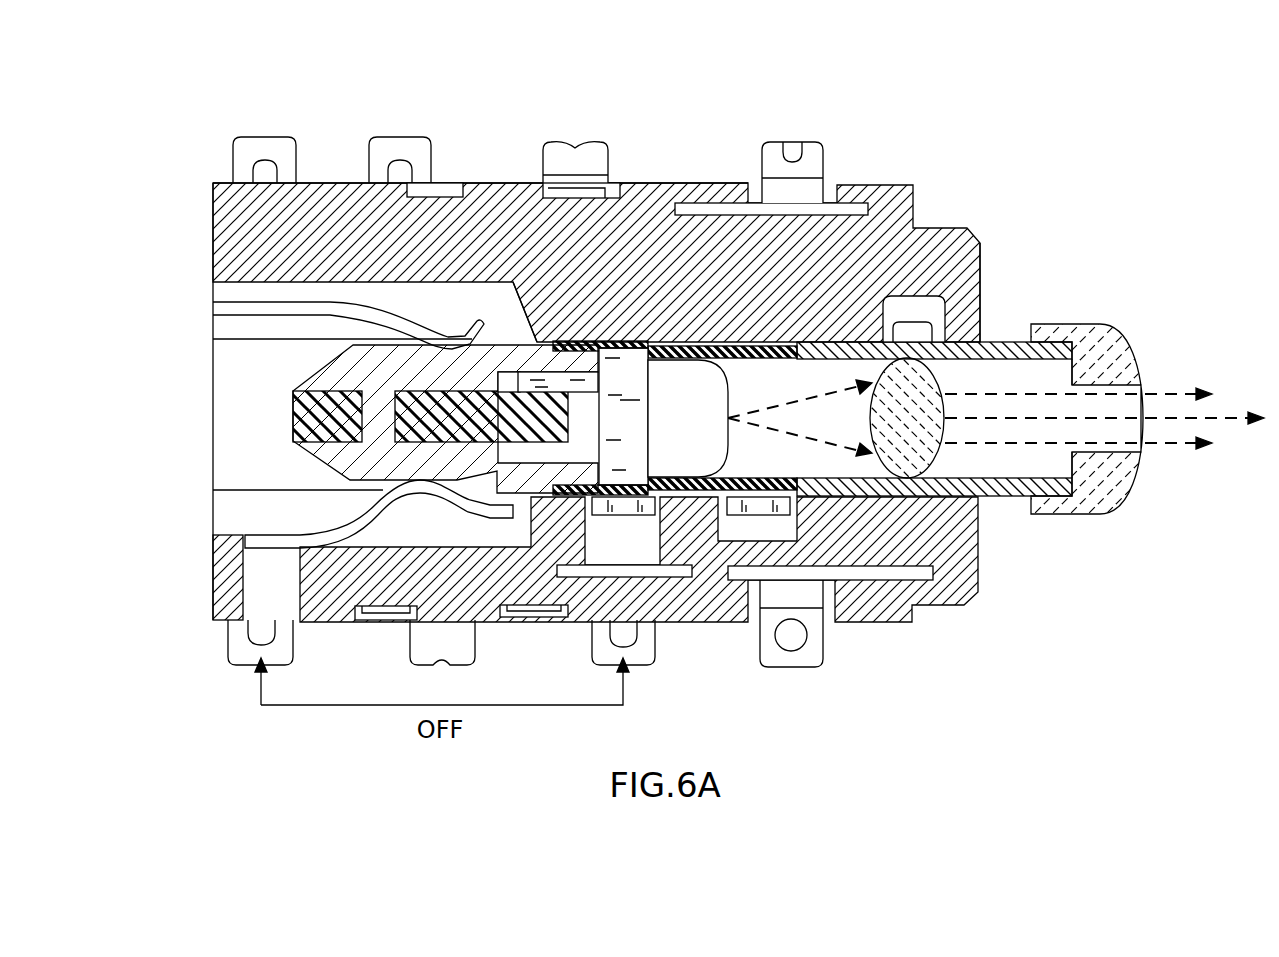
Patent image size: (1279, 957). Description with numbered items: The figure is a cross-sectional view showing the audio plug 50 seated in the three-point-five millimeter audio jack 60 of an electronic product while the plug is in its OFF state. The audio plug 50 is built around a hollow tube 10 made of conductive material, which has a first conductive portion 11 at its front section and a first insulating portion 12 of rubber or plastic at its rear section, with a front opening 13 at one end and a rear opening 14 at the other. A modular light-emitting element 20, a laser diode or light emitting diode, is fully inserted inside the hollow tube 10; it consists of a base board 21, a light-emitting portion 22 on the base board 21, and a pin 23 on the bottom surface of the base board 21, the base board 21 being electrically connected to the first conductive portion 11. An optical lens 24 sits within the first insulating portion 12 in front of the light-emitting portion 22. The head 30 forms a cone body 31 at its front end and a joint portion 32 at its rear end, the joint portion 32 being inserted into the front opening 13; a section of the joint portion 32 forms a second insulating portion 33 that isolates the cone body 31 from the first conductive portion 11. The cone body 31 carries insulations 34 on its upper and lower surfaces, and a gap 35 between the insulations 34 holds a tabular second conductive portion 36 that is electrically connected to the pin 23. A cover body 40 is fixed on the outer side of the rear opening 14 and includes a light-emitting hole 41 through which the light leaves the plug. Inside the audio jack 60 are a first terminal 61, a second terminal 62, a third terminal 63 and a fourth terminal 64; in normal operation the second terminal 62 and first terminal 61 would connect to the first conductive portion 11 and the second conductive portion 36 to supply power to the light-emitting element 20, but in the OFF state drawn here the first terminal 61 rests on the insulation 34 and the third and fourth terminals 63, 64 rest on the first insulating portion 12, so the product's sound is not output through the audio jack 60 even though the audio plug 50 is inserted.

The hollow tube 10 is at (810, 330).
The first conductive portion 11 is at (580, 343).
The first insulating portion 12 is at (872, 335).
The front opening 13 is at (535, 517).
The rear opening 14 is at (1042, 356).
The light-emitting element 20 is at (765, 69).
The base board 21 is at (622, 418).
The light-emitting portion 22 is at (690, 400).
The pin 23 is at (640, 346).
The optical lens 24 is at (945, 432).
The head 30 is at (207, 69).
The cone body 31 is at (236, 235).
The joint portion 32 is at (538, 360).
The second insulating portion 33 is at (505, 380).
The insulations 34 is at (375, 410).
The gap 35 is at (347, 355).
The second conductive portion 36 is at (296, 364).
The cover body 40 is at (1110, 486).
The light-emitting hole 41 is at (1125, 418).
The audio plug 50 is at (1005, 303).
The audio jack 60 is at (186, 210).
The first terminal 61 is at (411, 496).
The second terminal 62 is at (606, 518).
The third terminal 63 is at (772, 518).
The fourth terminal 64 is at (912, 334).